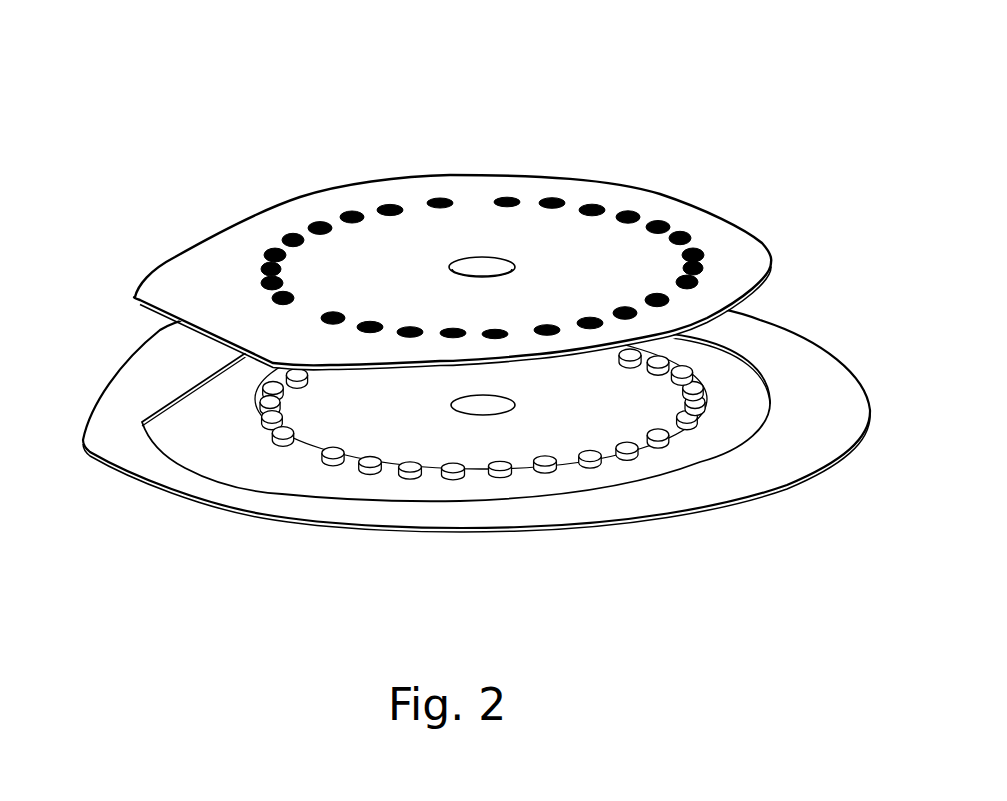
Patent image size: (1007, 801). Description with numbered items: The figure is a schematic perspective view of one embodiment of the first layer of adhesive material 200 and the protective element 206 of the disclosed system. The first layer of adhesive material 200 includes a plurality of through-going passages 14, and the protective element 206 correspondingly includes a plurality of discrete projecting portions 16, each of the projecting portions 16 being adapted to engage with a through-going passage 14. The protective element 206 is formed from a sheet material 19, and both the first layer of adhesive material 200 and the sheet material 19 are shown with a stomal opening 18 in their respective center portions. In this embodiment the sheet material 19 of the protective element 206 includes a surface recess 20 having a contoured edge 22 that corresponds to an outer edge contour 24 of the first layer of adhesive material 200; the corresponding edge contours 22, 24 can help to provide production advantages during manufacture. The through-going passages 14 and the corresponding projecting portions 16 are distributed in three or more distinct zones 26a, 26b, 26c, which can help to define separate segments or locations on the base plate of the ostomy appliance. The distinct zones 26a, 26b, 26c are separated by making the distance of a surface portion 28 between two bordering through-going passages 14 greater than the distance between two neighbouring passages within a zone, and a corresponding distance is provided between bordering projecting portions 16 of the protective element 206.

The through-going passages 14 is at (492, 185).
The projecting portions 16 is at (700, 377).
The stomal opening 18 is at (483, 412).
The sheet material 19 is at (498, 412).
The protective element 206 is at (498, 412).
The surface recess 20 is at (183, 437).
The contoured edge 22 is at (177, 383).
The outer edge contour 24 is at (437, 245).
The distinct zone 26a is at (270, 292).
The distinct zone 26b is at (697, 282).
The distinct zone 26c is at (652, 288).
The surface portion 28 is at (288, 323).
The first layer of adhesive material 200 is at (667, 210).